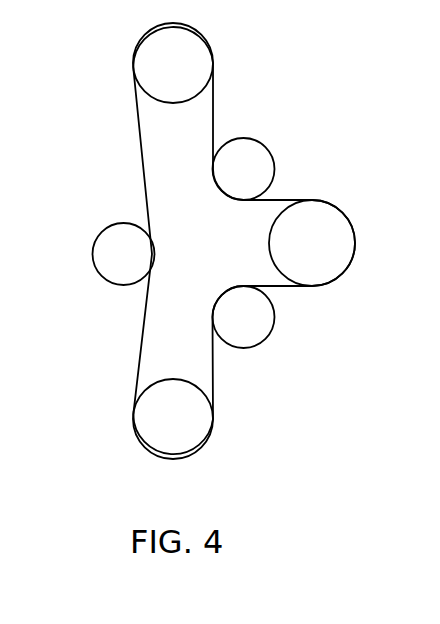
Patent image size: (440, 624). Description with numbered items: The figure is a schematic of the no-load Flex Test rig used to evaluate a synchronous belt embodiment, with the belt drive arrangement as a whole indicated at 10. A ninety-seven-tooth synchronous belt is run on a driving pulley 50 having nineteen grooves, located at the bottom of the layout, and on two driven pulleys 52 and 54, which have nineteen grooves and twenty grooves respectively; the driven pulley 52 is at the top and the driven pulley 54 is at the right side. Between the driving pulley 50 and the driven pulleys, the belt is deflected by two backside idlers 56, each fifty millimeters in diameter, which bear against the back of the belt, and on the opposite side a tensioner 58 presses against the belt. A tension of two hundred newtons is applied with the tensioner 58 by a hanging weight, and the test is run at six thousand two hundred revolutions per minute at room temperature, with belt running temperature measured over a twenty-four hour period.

The belt drive system 10 is at (224, 113).
The driving pulley 50 is at (183, 432).
The driven pulley 52 is at (190, 62).
The driven pulley 54 is at (322, 247).
The backside idlers 56 is at (257, 170).
The tensioner 58 is at (112, 270).